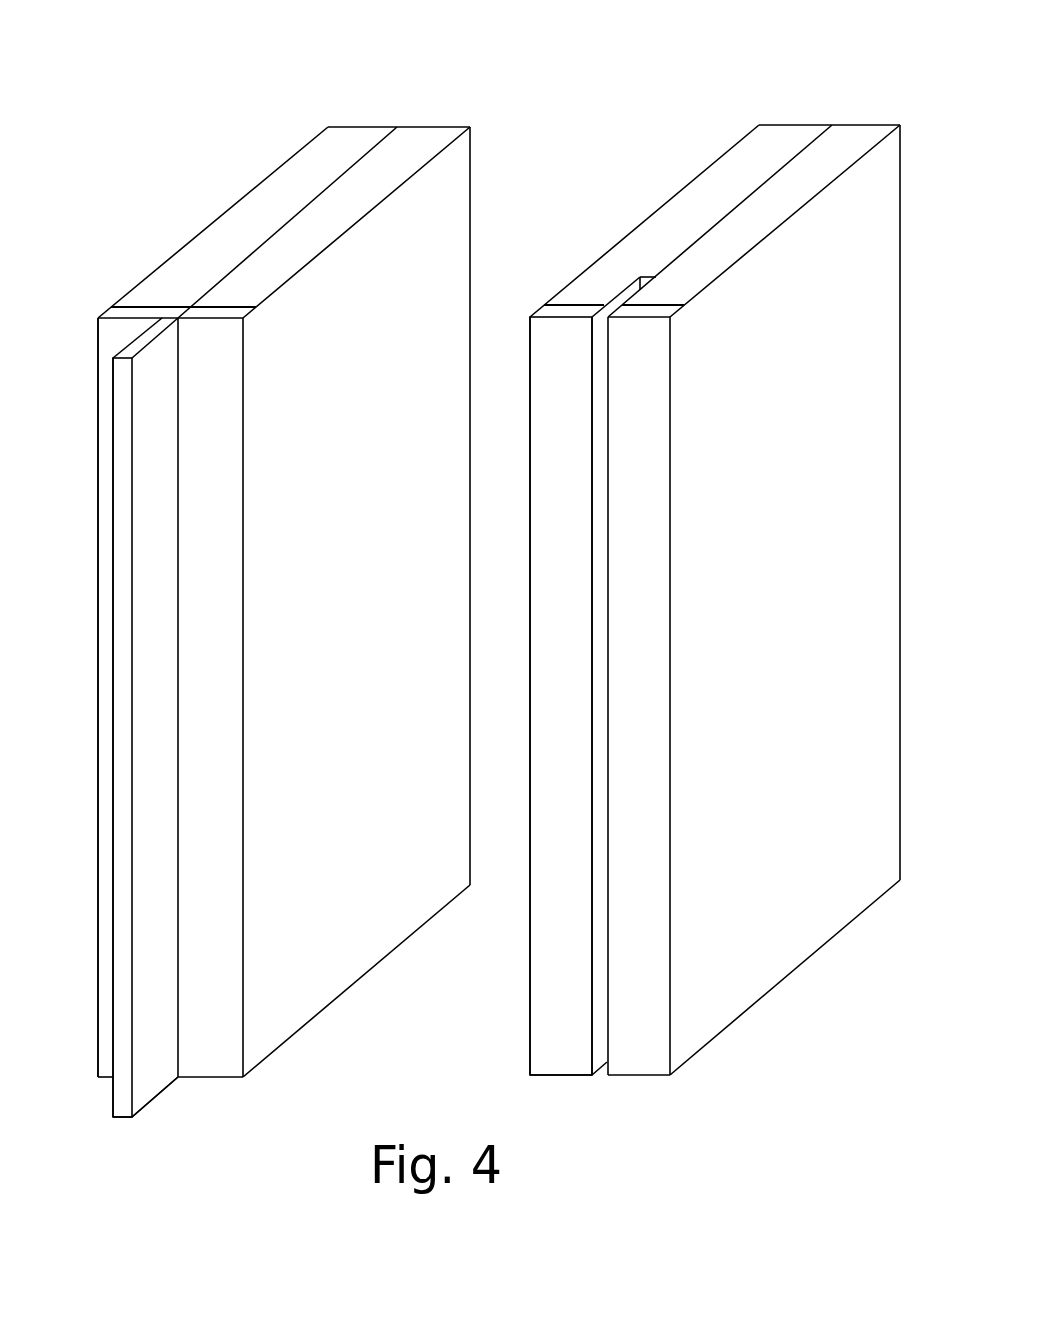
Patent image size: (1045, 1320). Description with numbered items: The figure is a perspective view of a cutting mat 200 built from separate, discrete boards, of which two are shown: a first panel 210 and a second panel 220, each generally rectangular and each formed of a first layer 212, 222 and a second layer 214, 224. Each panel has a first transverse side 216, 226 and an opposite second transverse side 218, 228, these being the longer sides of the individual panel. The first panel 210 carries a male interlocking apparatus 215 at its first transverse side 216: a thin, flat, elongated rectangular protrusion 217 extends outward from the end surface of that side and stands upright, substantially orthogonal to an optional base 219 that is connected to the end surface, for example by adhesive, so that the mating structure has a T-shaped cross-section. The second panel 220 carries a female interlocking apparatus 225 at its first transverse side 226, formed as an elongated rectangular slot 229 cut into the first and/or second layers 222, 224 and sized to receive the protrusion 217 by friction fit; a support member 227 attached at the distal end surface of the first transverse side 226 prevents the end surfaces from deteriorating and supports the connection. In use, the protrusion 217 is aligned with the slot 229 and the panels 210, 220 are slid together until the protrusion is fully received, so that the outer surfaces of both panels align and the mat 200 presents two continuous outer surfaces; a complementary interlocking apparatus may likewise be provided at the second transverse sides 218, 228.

The mat 200 is at (489, 580).
The first panel 210 is at (238, 203).
The first layer 212 is at (415, 143).
The second layer 214 is at (347, 145).
The interlocking apparatus 215 is at (97, 891).
The first transverse side 216 is at (97, 507).
The protrusion 217 is at (148, 1083).
The second transverse side 218 is at (472, 198).
The base 219 is at (106, 696).
The second panel 220 is at (690, 180).
The first layer 222 is at (782, 137).
The second layer 224 is at (843, 143).
The interlocking apparatus 225 is at (528, 690).
The first transverse side 226 is at (528, 513).
The support member 227 is at (550, 1000).
The second transverse side 228 is at (900, 255).
The slot 229 is at (612, 298).